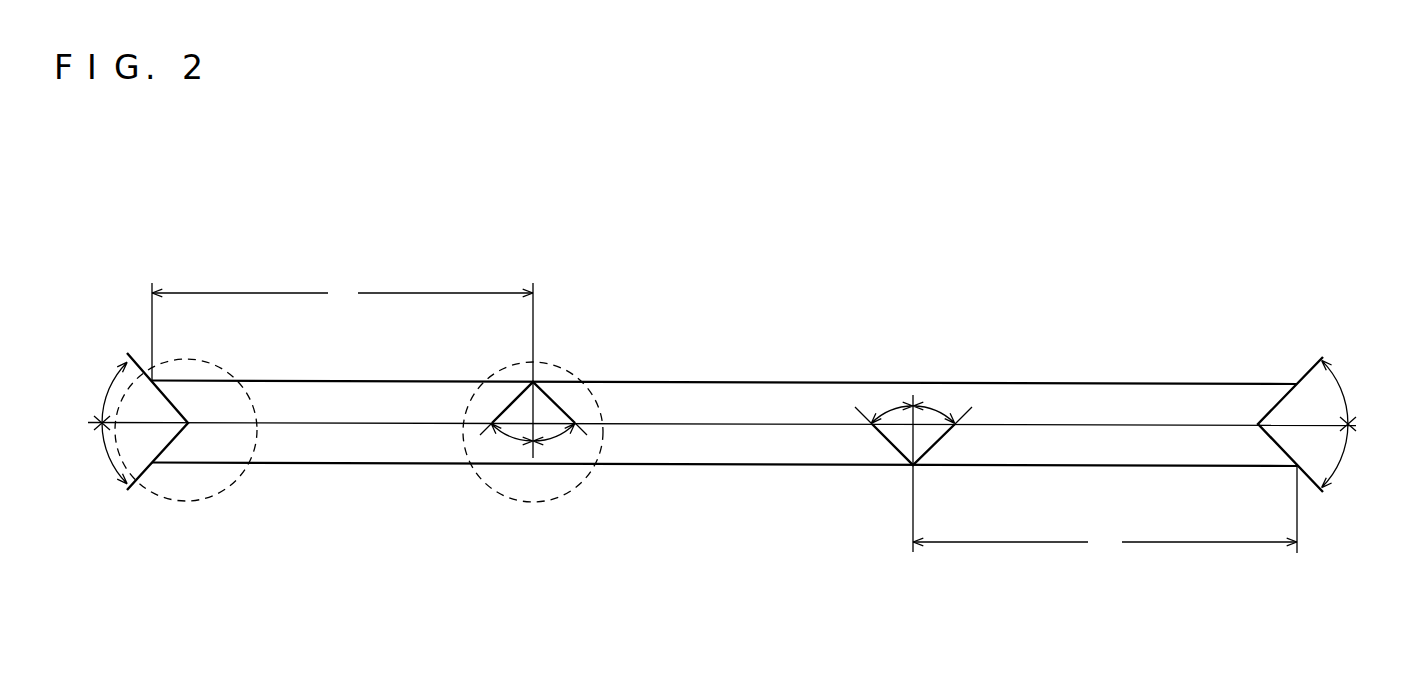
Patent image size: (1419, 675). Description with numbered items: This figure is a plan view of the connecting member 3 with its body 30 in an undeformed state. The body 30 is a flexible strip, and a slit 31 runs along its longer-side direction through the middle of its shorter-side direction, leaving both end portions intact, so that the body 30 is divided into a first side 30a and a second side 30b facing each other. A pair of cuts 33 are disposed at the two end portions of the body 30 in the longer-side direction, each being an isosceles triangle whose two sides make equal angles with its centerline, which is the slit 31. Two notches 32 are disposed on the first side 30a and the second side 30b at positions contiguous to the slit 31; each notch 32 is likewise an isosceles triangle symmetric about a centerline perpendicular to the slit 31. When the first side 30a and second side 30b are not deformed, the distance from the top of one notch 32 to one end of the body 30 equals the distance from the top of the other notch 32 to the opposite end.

The connecting member 3 is at (162, 188).
The body 30 is at (713, 381).
The first side 30a is at (797, 408).
The second side 30b is at (720, 448).
The slit 31 is at (1090, 423).
The notch 32 is at (552, 403).
The cut 33 is at (166, 403).